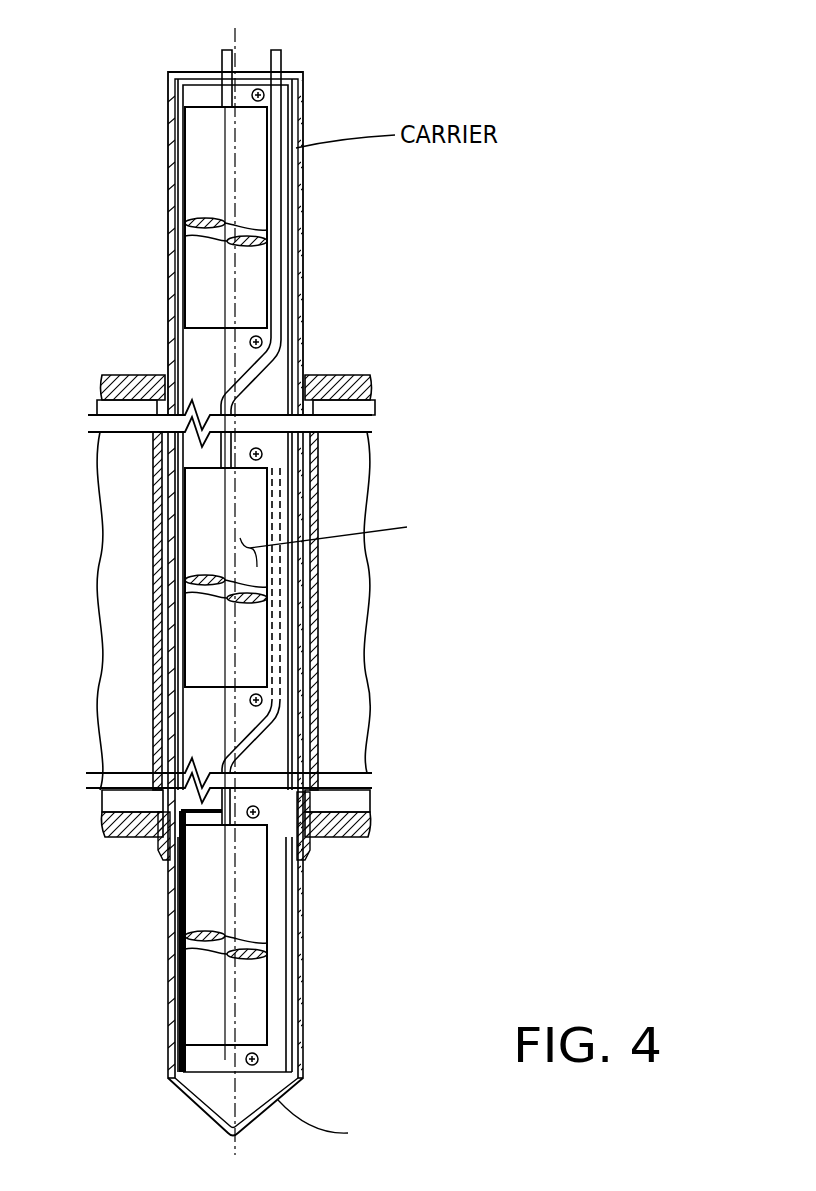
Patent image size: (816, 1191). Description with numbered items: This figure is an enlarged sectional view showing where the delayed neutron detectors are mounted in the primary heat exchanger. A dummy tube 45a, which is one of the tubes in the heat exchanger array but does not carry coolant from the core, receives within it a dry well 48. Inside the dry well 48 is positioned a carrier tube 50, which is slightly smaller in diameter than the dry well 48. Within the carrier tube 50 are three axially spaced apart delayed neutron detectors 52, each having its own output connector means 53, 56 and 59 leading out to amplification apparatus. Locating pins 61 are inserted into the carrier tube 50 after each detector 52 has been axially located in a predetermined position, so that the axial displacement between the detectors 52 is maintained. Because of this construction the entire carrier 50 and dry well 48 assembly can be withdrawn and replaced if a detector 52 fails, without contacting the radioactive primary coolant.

The dummy tube 45a is at (313, 799).
The dry well 48 is at (303, 960).
The carrier tube 50 is at (300, 262).
The delayed neutron detector 52 is at (219, 275).
The output connector means 53 is at (223, 53).
The output connector means 56 is at (282, 58).
The output connector means 59 is at (163, 812).
The locating pin 61 is at (262, 95).